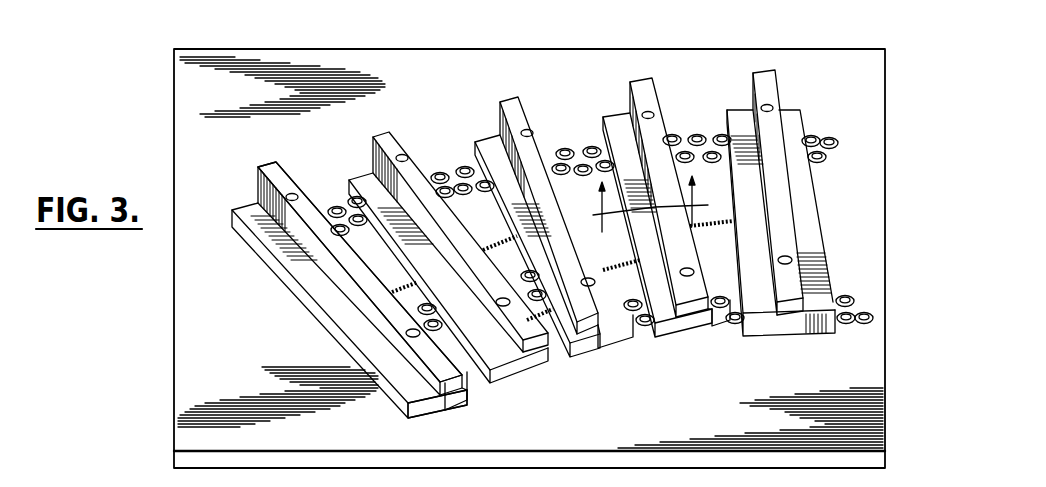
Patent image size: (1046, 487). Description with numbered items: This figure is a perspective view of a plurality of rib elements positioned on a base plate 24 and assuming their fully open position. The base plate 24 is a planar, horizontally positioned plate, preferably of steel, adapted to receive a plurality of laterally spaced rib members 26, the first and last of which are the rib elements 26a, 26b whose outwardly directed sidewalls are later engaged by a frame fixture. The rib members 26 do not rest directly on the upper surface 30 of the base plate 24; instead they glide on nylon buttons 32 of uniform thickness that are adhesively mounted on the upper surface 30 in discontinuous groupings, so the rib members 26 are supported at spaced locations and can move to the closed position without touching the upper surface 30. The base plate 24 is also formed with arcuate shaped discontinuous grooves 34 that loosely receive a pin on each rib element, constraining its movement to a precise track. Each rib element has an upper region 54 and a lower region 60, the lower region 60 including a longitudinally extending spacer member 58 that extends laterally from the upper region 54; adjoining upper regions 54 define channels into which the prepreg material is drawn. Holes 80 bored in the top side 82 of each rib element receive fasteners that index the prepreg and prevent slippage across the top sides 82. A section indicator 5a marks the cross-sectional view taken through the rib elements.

The base plate 24 is at (889, 310).
The rib members 26 is at (375, 137).
The first rib element 26a is at (768, 73).
The last rib element 26b is at (258, 167).
The upper surface 30 is at (240, 395).
The nylon buttons 32 is at (337, 206).
The arcuate shaped discontinuous grooves 34 is at (492, 243).
The upper region 54 is at (455, 385).
The spacer member 58 is at (290, 258).
The lower region 60 is at (406, 409).
The holes 80 is at (686, 305).
The top side 82 is at (388, 302).
The section line 5a- 5a is at (646, 202).